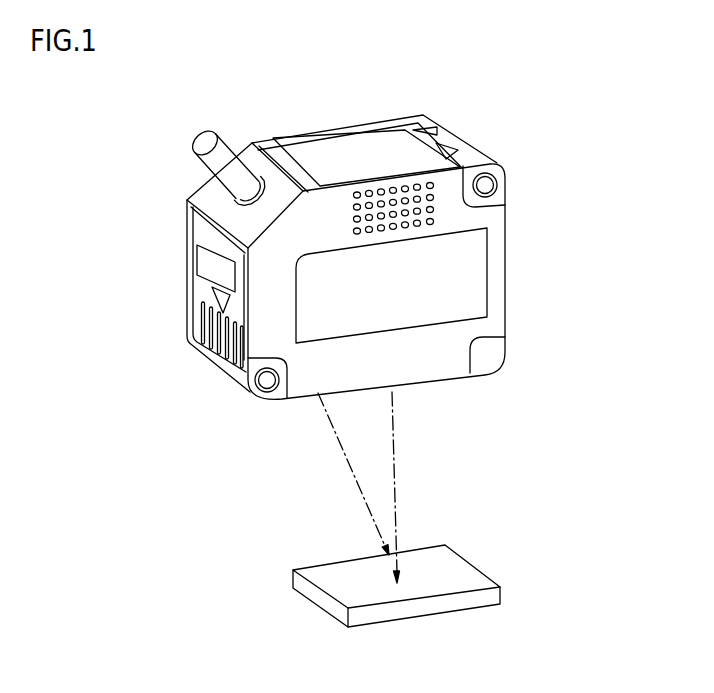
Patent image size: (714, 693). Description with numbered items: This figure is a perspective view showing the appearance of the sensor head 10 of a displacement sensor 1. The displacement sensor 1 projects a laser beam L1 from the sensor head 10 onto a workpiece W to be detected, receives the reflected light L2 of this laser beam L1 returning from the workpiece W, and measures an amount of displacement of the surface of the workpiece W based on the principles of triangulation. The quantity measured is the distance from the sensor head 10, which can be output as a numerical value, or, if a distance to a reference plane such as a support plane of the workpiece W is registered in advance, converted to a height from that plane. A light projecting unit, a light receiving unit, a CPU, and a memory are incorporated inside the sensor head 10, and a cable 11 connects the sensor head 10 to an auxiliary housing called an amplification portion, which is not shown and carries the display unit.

The displacement sensor 1 is at (503, 108).
The sensor head 10 is at (507, 222).
The cable 11 is at (210, 158).
The laser beam L1 is at (397, 437).
The reflected light L2 is at (350, 472).
The workpiece W is at (457, 567).